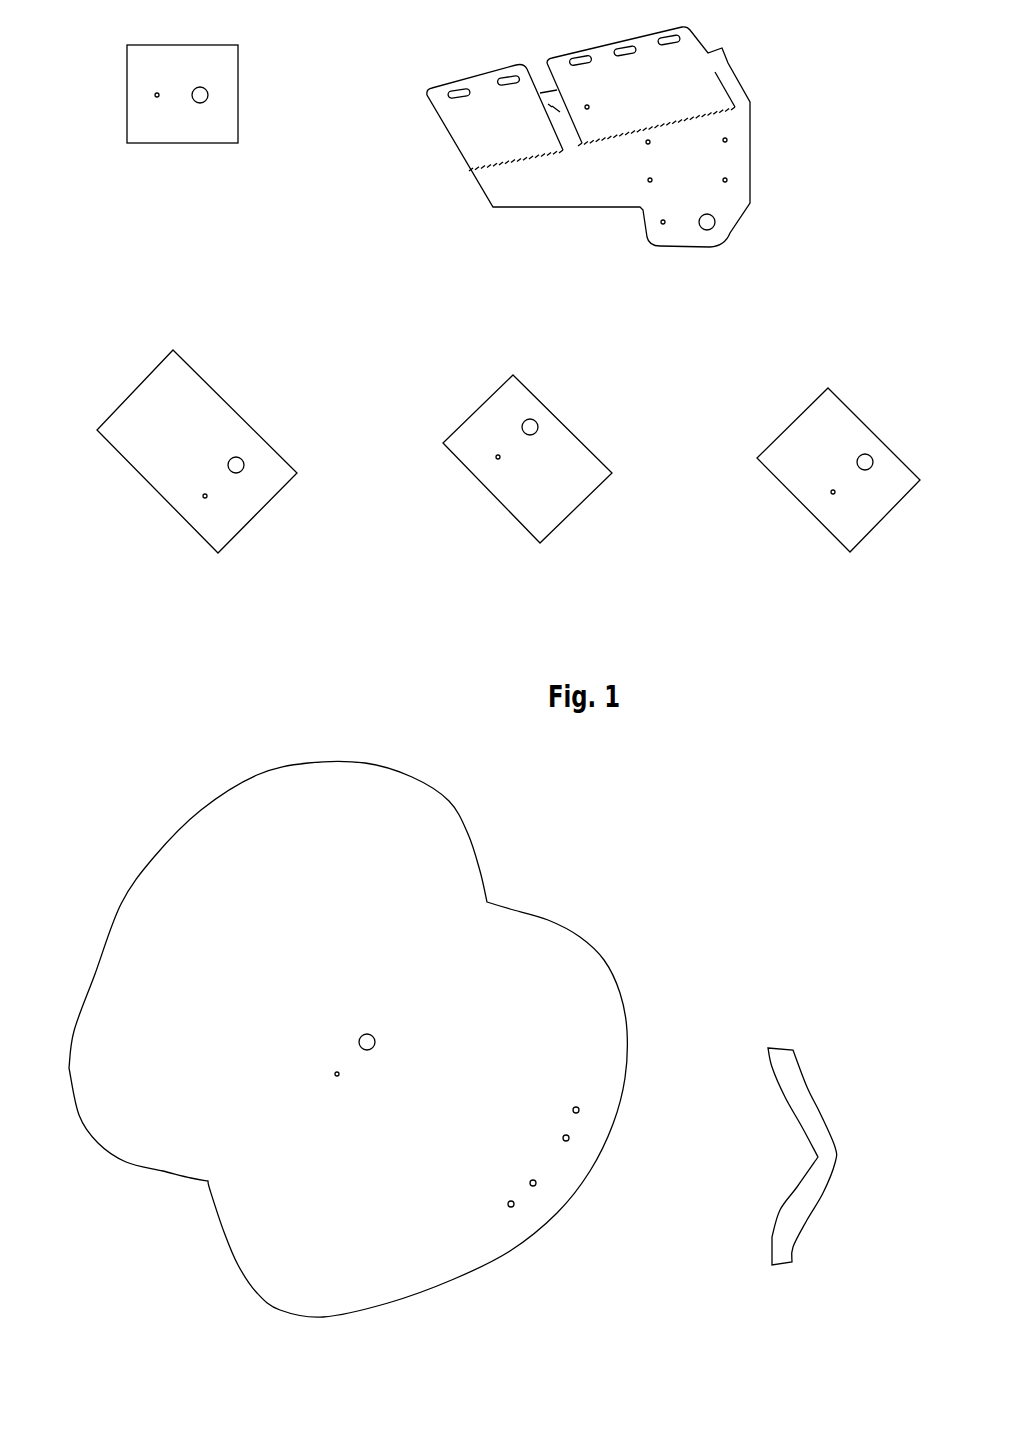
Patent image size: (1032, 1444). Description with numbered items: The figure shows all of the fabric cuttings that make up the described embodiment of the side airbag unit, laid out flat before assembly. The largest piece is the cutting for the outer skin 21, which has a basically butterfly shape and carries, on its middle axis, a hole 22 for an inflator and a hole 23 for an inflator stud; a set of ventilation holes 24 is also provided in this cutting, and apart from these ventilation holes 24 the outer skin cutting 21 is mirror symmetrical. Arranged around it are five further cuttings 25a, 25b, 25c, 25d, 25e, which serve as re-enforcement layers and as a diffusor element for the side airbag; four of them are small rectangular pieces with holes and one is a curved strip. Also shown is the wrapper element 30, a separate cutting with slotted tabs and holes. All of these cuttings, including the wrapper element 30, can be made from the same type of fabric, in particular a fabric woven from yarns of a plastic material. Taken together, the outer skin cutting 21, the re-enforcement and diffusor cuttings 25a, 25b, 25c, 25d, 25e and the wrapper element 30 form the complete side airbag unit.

The cutting for the outer skin 21 is at (202, 929).
The hole for an inflator 22 is at (374, 1038).
The hole for an inflator stud 23 is at (334, 1073).
The ventilation holes 24 is at (533, 1185).
The cutting for re-enforcement layer/diffusor 25a is at (783, 1077).
The cutting for re-enforcement layer/diffusor 25b is at (808, 445).
The cutting for re-enforcement layer/diffusor 25c is at (540, 500).
The cutting for re-enforcement layer/diffusor 25d is at (215, 432).
The cutting for re-enforcement layer/diffusor 25e is at (180, 125).
The wrapper element 30 is at (740, 150).